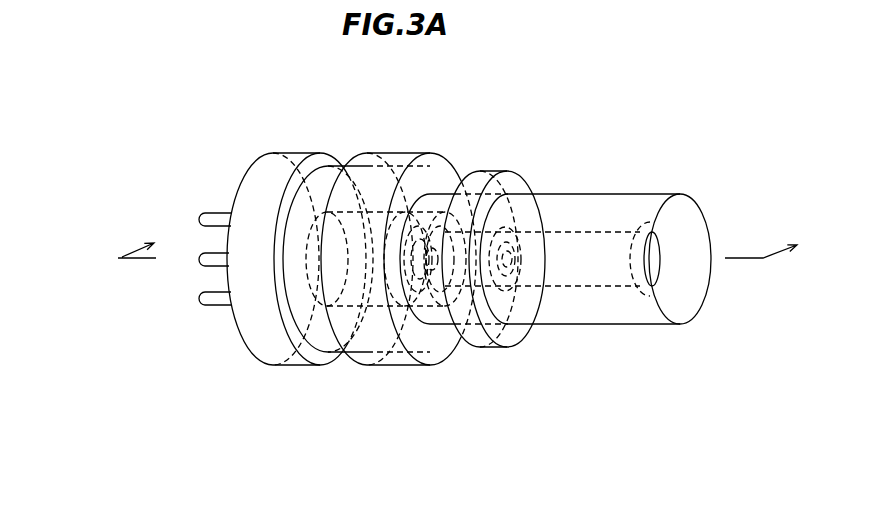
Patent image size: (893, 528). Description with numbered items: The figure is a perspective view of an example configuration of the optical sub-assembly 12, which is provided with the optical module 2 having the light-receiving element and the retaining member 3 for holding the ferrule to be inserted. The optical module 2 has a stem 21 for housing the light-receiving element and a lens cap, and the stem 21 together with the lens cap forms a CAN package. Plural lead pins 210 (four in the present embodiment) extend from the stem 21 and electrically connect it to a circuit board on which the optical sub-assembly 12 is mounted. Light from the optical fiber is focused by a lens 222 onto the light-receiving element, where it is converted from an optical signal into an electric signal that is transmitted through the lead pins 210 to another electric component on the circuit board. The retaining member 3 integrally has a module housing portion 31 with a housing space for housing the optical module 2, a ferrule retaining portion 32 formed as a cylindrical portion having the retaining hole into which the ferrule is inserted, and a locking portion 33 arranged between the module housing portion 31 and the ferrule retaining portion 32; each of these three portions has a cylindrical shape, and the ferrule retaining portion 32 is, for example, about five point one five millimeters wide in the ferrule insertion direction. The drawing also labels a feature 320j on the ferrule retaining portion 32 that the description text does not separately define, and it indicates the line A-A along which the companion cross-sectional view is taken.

The optical sub-assembly 12 is at (596, 75).
The optical module 2 is at (381, 198).
The stem 21 is at (246, 155).
The lead pins 210 is at (205, 298).
The lens 222 is at (428, 248).
The retaining member 3 is at (855, 457).
The module housing portion 31 is at (342, 375).
The ferrule retaining portion 32 is at (606, 340).
The locking portion 33 is at (455, 379).
The inner surface of ferrule retaining portion 320j is at (588, 232).